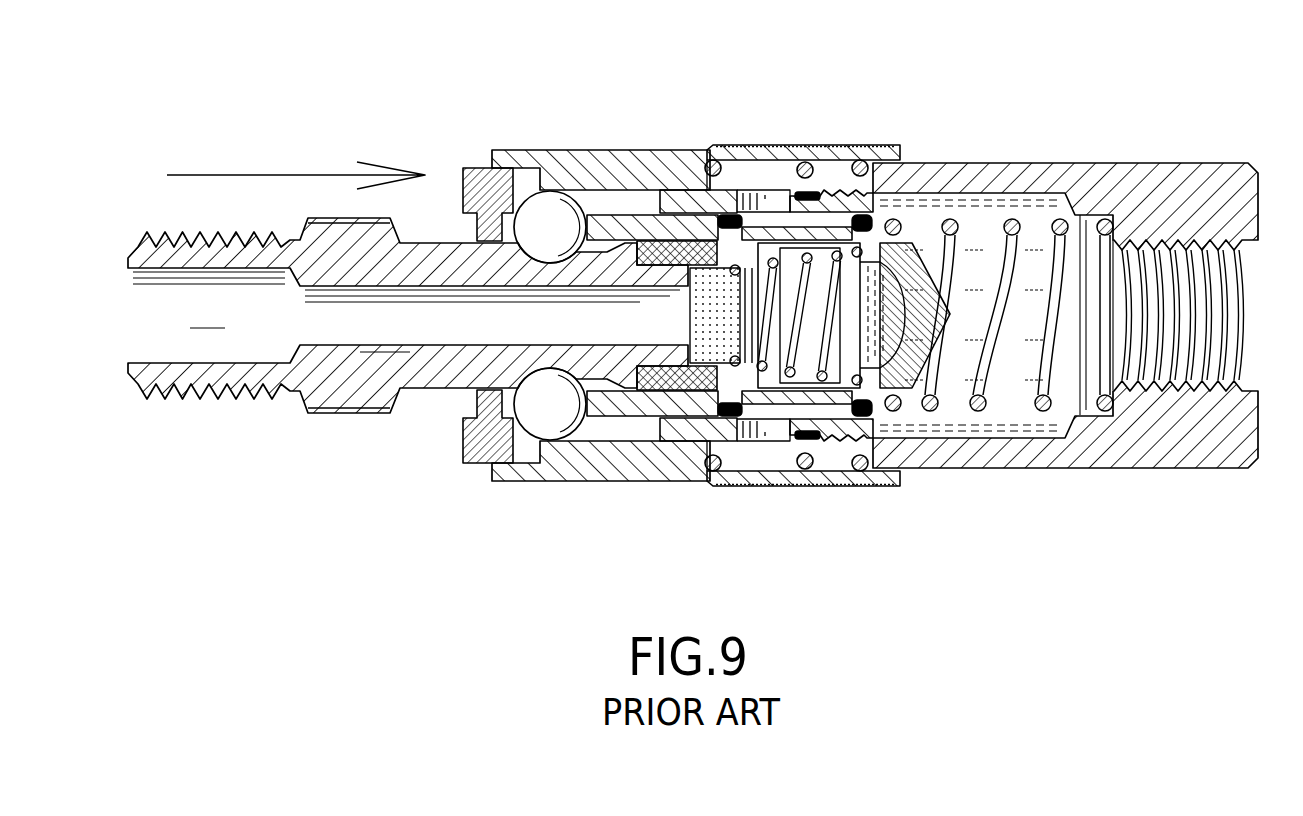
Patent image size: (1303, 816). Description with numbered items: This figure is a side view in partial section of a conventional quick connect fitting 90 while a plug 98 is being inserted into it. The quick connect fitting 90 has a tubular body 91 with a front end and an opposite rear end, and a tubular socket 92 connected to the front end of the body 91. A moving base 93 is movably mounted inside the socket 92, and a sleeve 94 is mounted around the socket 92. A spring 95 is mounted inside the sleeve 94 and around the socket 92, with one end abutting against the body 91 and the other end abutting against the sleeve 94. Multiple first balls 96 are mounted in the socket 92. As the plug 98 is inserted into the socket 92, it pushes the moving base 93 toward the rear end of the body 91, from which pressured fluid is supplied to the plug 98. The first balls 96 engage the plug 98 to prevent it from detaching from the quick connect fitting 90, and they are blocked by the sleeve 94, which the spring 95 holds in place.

The quick connect fitting 90 is at (1020, 95).
The body 91 is at (1135, 172).
The socket 92 is at (730, 193).
The moving base 93 is at (632, 225).
The sleeve 94 is at (630, 165).
The spring 95 is at (810, 180).
The first balls 96 is at (540, 205).
The plug 98 is at (356, 393).